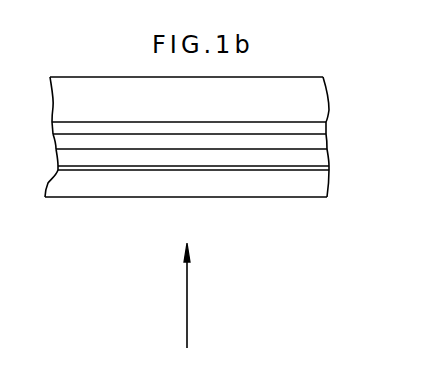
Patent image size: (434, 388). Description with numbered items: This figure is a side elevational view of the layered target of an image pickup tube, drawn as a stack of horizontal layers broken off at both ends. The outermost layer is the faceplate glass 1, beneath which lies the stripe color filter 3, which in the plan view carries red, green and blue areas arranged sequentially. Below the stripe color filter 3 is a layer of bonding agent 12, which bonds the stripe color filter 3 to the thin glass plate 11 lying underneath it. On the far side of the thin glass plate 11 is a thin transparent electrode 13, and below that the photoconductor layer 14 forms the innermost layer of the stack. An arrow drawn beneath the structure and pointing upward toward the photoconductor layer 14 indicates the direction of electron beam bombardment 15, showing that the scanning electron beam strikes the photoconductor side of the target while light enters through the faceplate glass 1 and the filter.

The faceplate glass 1 is at (323, 103).
The stripe color filter 3 is at (325, 128).
The bonding agent 12 is at (323, 141).
The thin glass plate 11 is at (327, 157).
The transparent electrode 13 is at (327, 168).
The photoconductor layer 14 is at (317, 184).
The direction of electron beam bombardment 15 is at (188, 305).